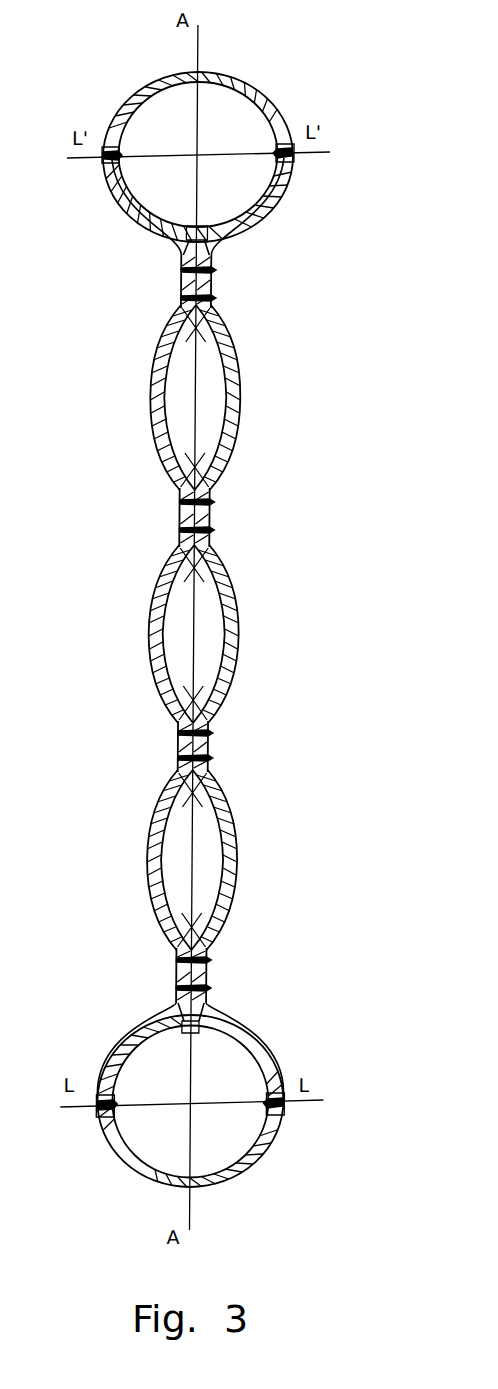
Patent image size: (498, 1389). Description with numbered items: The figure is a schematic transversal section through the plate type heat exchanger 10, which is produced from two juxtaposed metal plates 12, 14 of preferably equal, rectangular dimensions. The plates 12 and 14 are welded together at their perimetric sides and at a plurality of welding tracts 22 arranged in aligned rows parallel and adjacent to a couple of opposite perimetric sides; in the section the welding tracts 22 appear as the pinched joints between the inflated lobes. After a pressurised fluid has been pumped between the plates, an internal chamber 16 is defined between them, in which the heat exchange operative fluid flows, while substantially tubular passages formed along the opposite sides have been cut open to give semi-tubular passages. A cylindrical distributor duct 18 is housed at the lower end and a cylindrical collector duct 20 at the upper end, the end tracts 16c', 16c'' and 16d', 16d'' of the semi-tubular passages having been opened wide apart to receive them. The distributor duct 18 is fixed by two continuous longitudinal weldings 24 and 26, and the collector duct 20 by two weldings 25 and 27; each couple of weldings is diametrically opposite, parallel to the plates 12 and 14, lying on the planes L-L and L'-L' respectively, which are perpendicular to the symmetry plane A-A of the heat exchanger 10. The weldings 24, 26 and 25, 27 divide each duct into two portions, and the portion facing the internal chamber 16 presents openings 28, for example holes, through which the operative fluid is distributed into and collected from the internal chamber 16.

The plate type heat exchanger 10 is at (258, 582).
The metal plate 12 is at (244, 400).
The metal plate 14 is at (164, 351).
The internal chamber 16 is at (188, 635).
The distributor duct 18 is at (245, 1176).
The collector duct 20 is at (237, 88).
The welding tracts 22 is at (213, 270).
The welding 24 is at (107, 1102).
The welding 25 is at (107, 162).
The welding 26 is at (290, 1102).
The welding 27 is at (288, 160).
The openings 28 is at (194, 226).
The end tract 16c' is at (92, 1146).
The end tract 16c'' is at (297, 1145).
The end tract 16d' is at (93, 109).
The end tract 16d'' is at (303, 108).